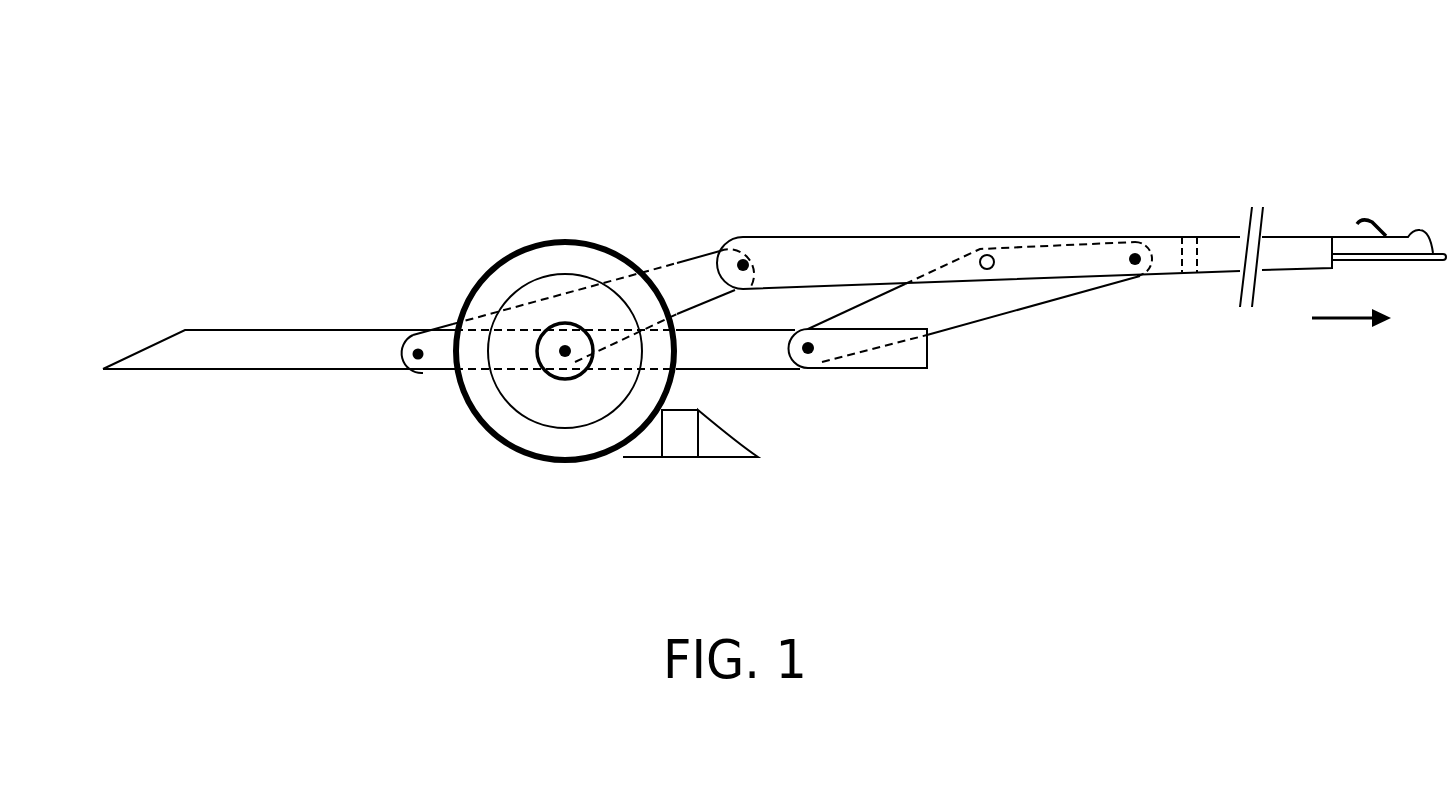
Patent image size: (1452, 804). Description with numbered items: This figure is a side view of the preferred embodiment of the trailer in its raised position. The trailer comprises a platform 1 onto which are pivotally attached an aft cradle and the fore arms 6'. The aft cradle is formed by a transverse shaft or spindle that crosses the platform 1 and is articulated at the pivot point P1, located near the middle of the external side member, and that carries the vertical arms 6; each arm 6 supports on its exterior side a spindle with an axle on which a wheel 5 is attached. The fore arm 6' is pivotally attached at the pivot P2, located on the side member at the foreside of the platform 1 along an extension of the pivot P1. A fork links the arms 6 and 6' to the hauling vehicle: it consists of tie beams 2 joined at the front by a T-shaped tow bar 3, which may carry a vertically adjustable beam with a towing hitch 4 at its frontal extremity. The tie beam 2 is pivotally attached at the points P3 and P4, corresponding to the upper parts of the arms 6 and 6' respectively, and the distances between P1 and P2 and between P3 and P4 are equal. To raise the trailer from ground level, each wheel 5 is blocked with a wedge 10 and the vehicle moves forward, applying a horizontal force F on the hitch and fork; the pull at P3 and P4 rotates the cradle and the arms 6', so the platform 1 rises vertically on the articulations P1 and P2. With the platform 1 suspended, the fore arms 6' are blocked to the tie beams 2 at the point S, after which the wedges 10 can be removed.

The platform 1 is at (217, 347).
The tie beam 2 is at (817, 266).
The tow bar 3 is at (1223, 252).
The towing hitch 4 is at (1372, 248).
The wheel 5 is at (543, 265).
The vertical arm 6 is at (583, 183).
The fore arm 6' is at (980, 183).
The wedge 10 is at (683, 433).
The pivot point P1 is at (413, 360).
The pivot P2 is at (815, 355).
The pivot point P3 is at (743, 265).
The pivot point P4 is at (1135, 259).
The blocking point S is at (1000, 277).
The horizontal force F is at (1351, 298).